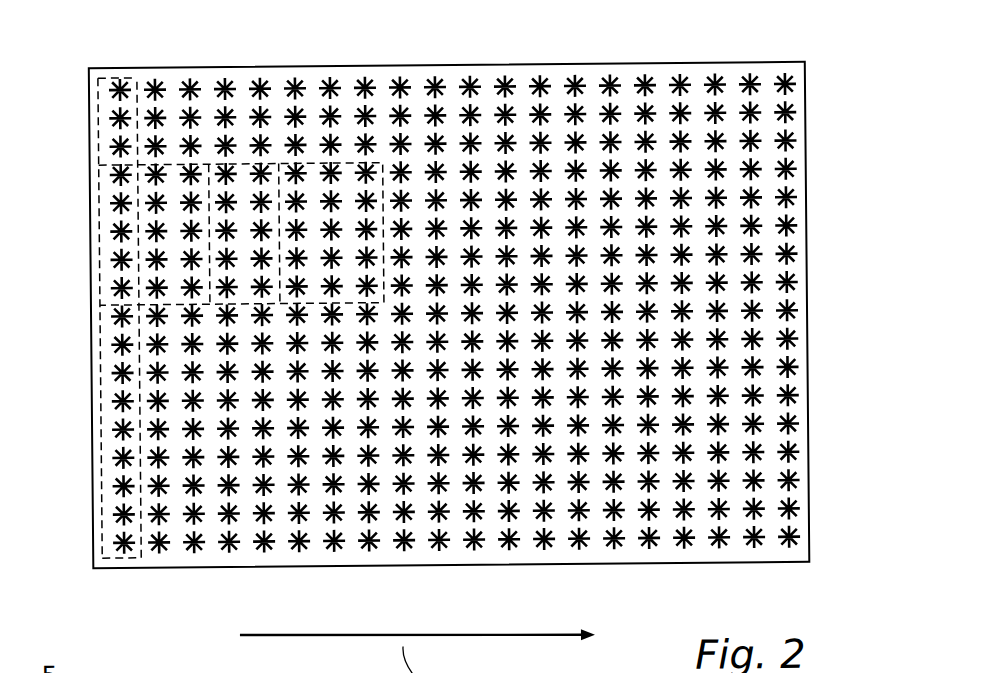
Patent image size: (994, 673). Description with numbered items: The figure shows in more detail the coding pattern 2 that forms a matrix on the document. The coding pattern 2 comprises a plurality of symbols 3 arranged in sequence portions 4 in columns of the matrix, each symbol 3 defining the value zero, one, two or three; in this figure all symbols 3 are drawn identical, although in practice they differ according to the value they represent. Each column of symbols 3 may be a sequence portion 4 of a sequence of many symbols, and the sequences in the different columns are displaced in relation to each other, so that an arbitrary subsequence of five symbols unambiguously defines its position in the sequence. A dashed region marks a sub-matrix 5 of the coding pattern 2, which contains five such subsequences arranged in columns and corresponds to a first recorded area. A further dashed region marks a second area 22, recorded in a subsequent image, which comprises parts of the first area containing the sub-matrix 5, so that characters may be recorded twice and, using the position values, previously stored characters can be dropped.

The coding pattern 2 is at (668, 568).
The symbols 3 is at (116, 286).
The sequence portions 4 is at (133, 558).
The sub-matrix 5 is at (98, 180).
The second area 22 is at (347, 165).